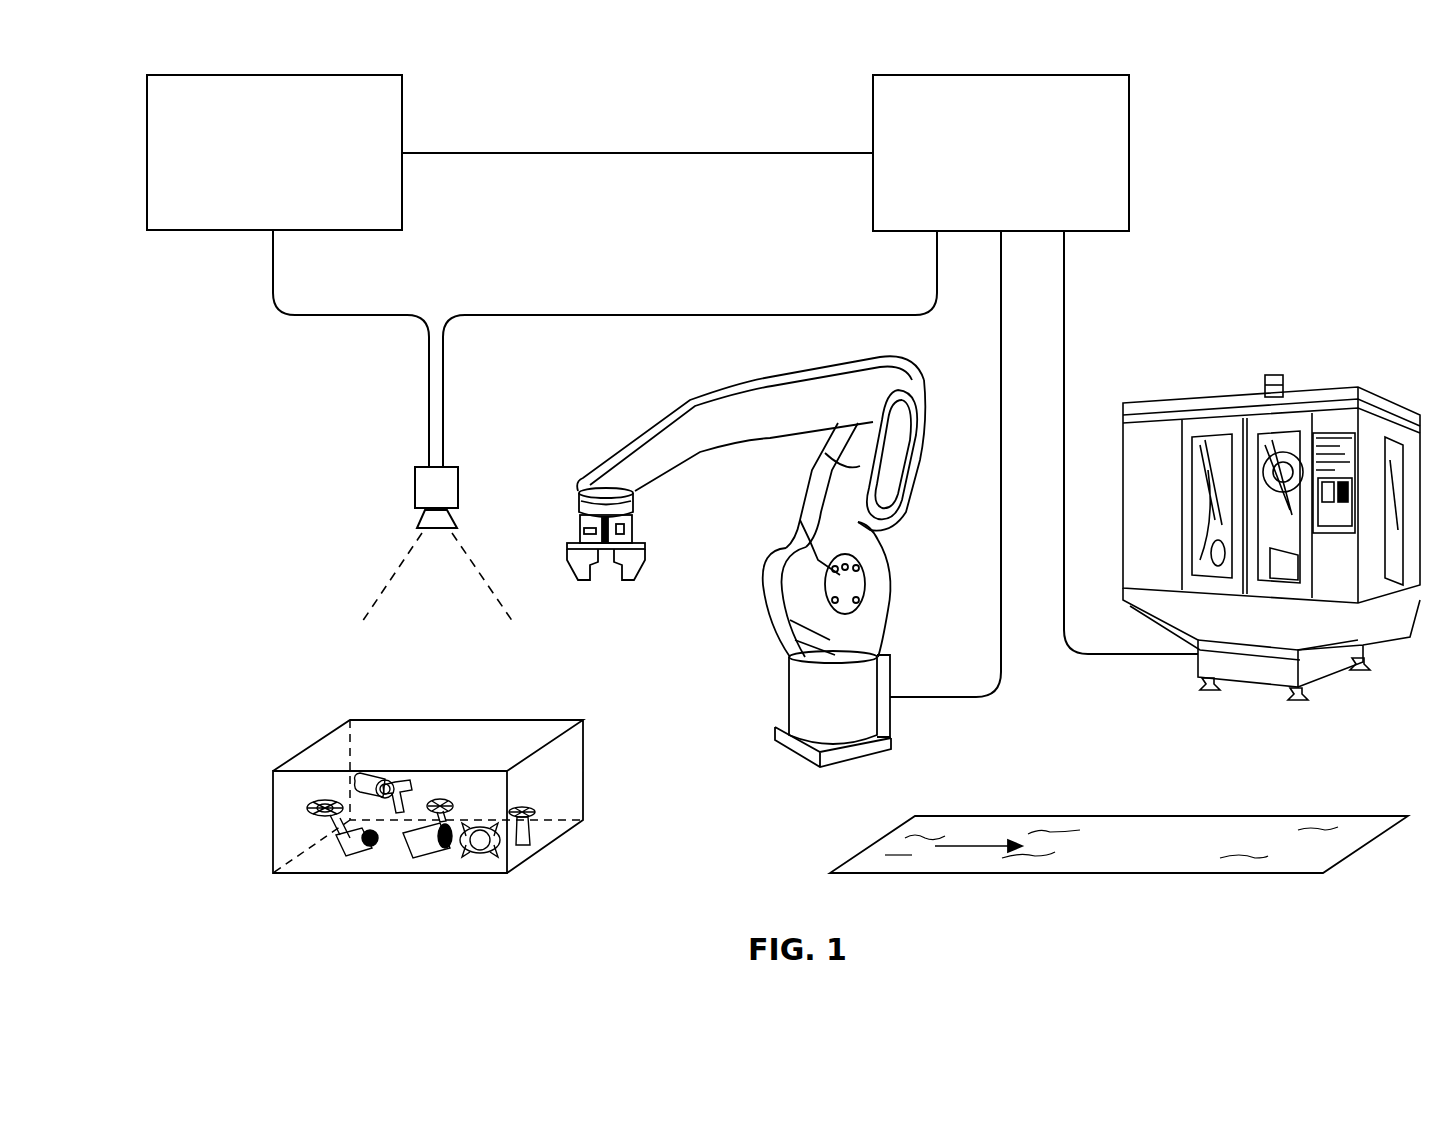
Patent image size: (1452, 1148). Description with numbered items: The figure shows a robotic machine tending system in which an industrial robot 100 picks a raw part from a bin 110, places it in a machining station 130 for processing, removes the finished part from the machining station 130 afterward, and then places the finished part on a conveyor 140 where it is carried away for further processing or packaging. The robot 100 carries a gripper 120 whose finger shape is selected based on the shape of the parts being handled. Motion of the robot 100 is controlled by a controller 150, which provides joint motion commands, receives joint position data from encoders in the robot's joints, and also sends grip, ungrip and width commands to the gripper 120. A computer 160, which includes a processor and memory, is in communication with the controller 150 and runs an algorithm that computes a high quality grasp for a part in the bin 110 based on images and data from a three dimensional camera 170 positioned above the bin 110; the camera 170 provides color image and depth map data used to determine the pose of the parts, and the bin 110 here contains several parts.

The industrial robot 100 is at (779, 683).
The bin 110 is at (368, 720).
The gripper 120 is at (649, 552).
The machining station 130 is at (1327, 368).
The conveyor 140 is at (968, 815).
The controller 150 is at (1088, 75).
The computer 160 is at (360, 75).
The three dimensional (3D) camera 170 is at (425, 466).